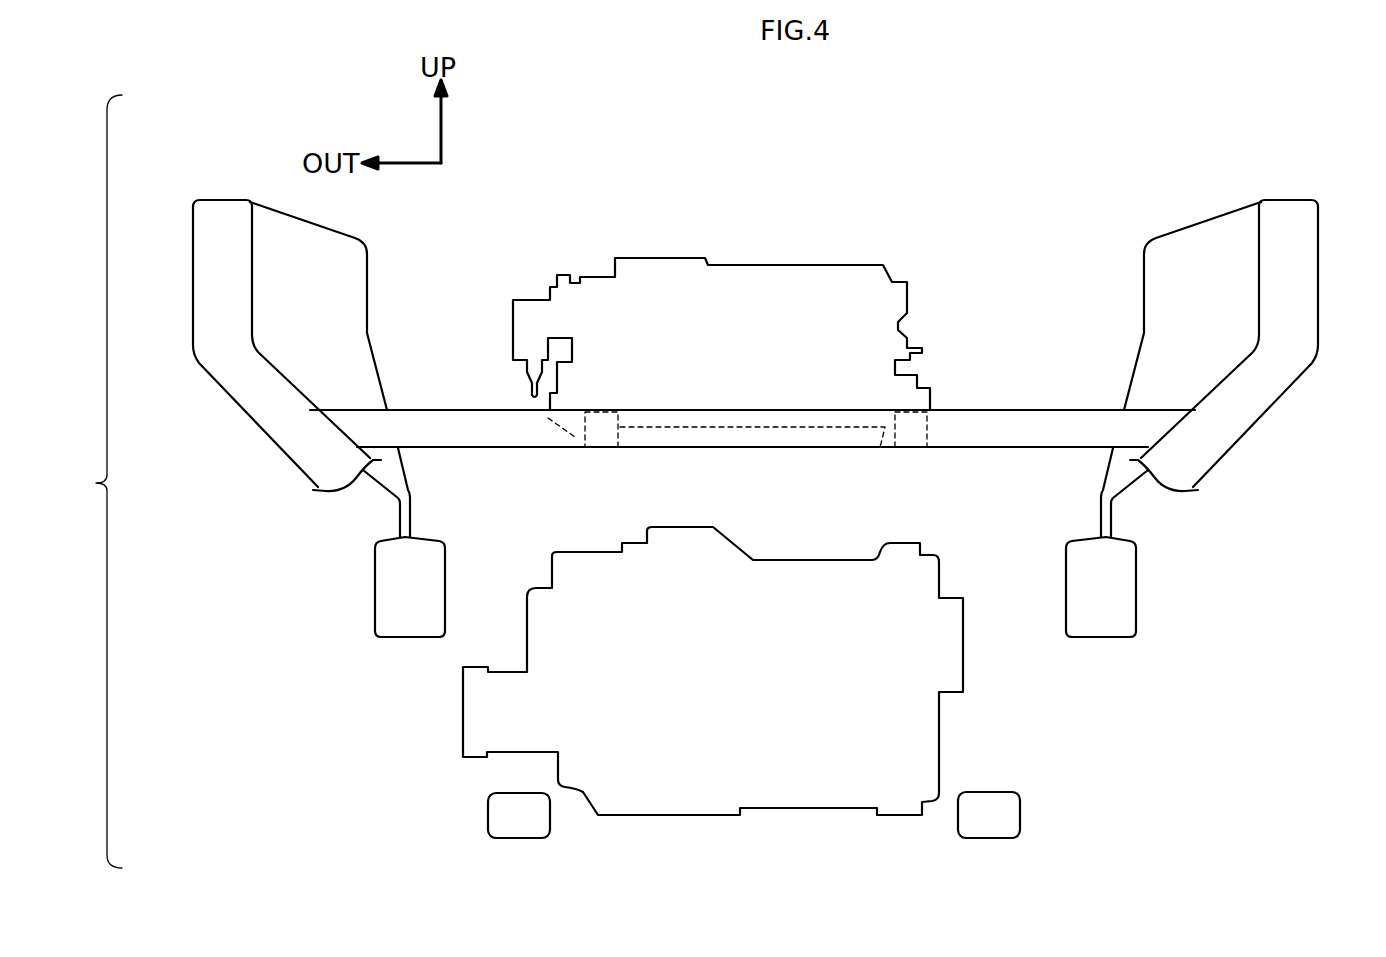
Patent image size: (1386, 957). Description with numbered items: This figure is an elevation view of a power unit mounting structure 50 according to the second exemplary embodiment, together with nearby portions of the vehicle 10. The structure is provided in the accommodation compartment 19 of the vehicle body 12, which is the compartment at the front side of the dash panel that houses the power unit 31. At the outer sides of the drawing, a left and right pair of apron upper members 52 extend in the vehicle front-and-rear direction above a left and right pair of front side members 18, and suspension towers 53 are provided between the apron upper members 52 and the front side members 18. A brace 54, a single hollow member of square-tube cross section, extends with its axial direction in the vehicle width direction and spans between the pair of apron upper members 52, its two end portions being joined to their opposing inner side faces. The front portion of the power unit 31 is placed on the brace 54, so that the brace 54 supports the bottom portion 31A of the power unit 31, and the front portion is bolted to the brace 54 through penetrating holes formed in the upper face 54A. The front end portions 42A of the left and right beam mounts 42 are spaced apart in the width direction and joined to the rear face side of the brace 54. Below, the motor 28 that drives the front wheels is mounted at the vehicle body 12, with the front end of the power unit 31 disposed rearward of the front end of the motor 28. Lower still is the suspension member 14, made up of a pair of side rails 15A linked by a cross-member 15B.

The vehicle 10 is at (1212, 140).
The vehicle body 12 is at (1152, 546).
The suspension member 14 is at (782, 815).
The side rails 15A is at (992, 840).
The cross-member 15B is at (513, 840).
The front side members 18 is at (373, 590).
The accommodation compartment 19 is at (970, 518).
The motor 28 is at (966, 657).
The power unit 31 is at (721, 341).
The bottom portion 31A is at (777, 440).
The beam mounts 42 is at (622, 423).
The front end portions 42A is at (633, 448).
The power unit mounting structure 50 is at (1060, 208).
The apron upper members 52 is at (191, 278).
The suspension towers 53 is at (371, 282).
The brace 54 is at (1041, 407).
The upper face 54A is at (1083, 409).